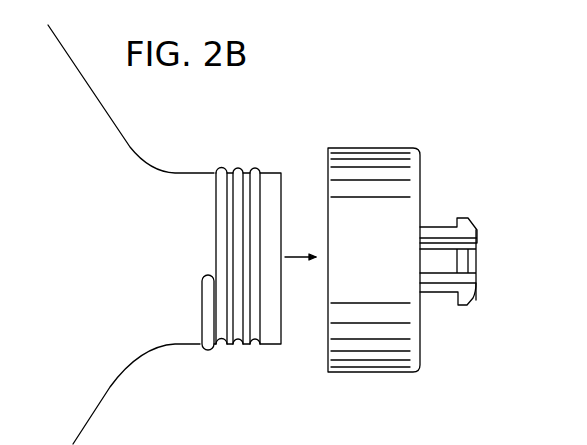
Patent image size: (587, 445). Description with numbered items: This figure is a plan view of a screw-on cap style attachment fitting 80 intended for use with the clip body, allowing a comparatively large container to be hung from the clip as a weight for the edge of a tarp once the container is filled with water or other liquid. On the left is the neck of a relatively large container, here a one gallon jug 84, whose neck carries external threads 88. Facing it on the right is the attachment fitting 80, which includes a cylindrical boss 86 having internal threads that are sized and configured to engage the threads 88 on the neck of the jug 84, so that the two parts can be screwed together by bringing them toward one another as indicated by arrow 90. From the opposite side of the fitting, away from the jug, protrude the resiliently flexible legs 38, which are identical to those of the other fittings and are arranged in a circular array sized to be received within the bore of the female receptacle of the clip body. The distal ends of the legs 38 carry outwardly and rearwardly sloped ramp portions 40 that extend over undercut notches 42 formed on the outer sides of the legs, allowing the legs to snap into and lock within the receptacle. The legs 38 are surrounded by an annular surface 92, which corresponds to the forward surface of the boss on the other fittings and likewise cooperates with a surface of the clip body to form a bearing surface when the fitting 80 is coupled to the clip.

The jug 84 is at (128, 266).
The threads 88 is at (227, 351).
The arrow 90 is at (293, 256).
The attachment fitting 80 is at (383, 141).
The annular surface 92 is at (422, 197).
The cylindrical boss 86 is at (358, 375).
The flexible legs 38 is at (433, 265).
The undercut notches 42 is at (455, 218).
The ramp portions 40 is at (473, 300).